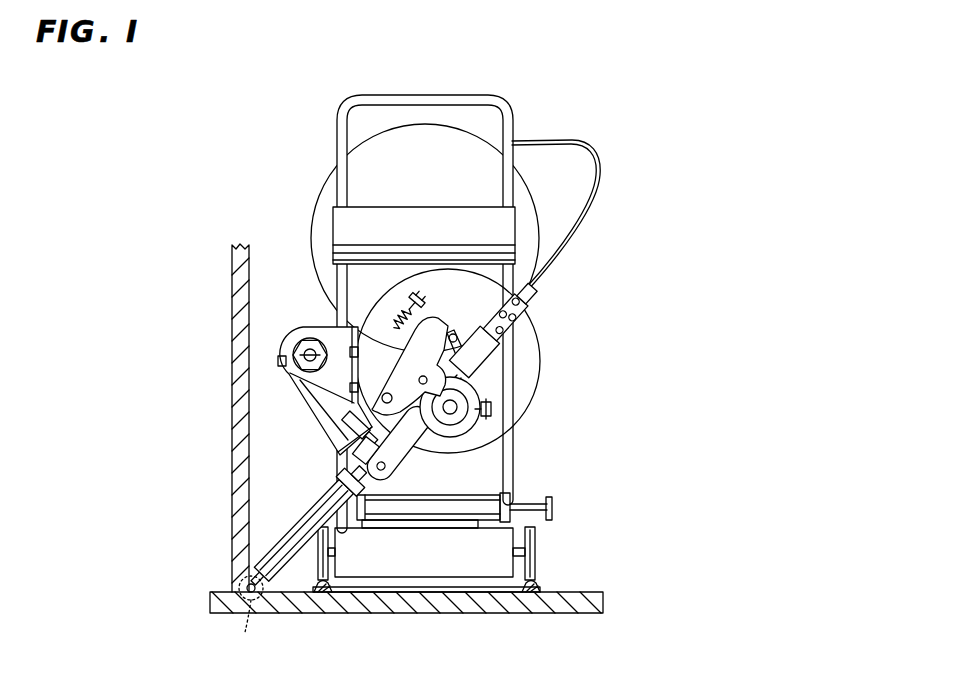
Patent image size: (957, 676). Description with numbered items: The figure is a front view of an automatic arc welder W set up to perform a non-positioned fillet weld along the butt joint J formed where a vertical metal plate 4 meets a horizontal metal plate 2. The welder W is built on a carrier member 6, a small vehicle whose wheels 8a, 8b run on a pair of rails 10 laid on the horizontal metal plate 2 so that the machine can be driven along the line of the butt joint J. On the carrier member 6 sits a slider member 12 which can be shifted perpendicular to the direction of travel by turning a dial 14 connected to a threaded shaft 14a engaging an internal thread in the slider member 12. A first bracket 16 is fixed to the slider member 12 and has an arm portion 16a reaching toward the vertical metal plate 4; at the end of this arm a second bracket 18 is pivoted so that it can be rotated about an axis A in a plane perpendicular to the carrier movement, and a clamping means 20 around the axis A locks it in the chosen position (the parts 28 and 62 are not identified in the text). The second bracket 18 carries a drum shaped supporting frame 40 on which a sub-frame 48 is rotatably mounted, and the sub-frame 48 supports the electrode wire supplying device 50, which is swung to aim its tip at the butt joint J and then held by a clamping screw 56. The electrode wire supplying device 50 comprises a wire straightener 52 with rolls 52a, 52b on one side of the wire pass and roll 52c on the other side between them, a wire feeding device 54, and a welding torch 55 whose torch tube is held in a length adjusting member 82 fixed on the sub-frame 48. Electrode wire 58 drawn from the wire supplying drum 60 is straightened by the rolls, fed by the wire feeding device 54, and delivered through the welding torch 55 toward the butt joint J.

The automatic arc welder W is at (540, 114).
The horizontal metal plate 2 is at (441, 604).
The vertical metal plate 4 is at (240, 400).
The carrier member 6 is at (397, 560).
The wheel 8a is at (318, 566).
The wheel 8b is at (536, 556).
The rails 10 is at (324, 597).
The slider member 12 is at (492, 500).
The dial 14 is at (553, 508).
The shaft 14a is at (551, 522).
The first bracket 16 is at (429, 493).
The arm portion 16a is at (306, 409).
The second bracket 18 is at (322, 330).
The clamping means 20 is at (306, 353).
The nut 28 is at (307, 360).
The axis A is at (302, 347).
The drum shaped supporting frame 40 is at (409, 343).
The sub-frame 48 is at (480, 392).
The electrode wire supplying device 50 is at (494, 368).
The wire straightener 52 is at (491, 306).
The roll 52a is at (528, 290).
The roll 52b is at (513, 311).
The roll 52c is at (499, 333).
The wire feeding device 54 is at (429, 418).
The welding torch 55 is at (328, 490).
The clamping screw 56 is at (490, 412).
The electrode wire 58 is at (568, 140).
The wire supplying drum 60 is at (448, 172).
The plate 62 is at (456, 420).
The length adjusting member 82 is at (330, 455).
The butt joint J is at (247, 620).